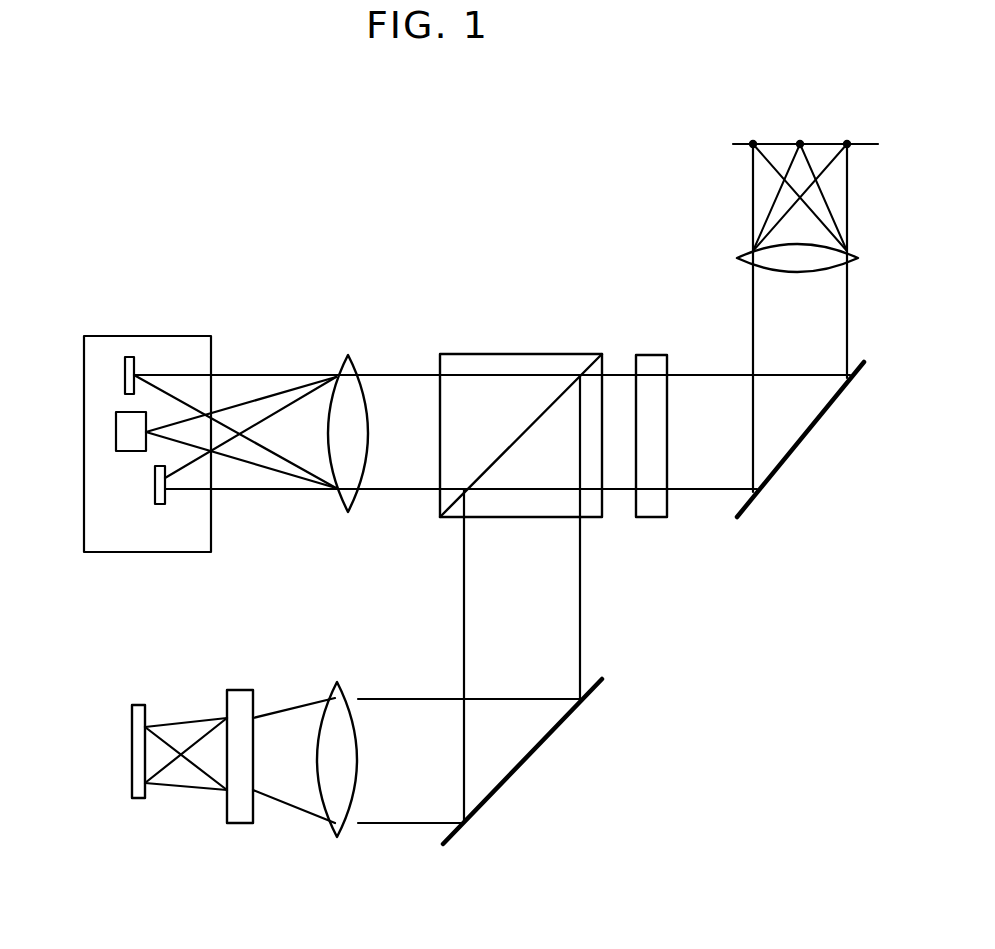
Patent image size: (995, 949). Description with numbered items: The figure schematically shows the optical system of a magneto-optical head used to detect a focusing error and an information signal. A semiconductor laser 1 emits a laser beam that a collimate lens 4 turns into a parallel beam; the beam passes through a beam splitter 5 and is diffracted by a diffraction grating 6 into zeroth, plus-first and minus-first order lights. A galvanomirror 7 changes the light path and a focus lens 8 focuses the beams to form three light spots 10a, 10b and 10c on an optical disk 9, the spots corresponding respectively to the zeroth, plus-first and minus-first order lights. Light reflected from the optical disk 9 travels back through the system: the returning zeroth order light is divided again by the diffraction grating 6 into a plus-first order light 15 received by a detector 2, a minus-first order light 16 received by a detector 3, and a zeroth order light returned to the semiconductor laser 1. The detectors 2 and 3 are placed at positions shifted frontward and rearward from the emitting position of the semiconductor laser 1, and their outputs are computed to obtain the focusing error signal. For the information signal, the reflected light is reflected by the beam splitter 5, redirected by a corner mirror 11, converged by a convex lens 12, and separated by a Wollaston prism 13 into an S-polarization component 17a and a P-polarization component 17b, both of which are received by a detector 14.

The semiconductor laser 1 is at (112, 436).
The detector 2 is at (150, 494).
The detector 3 is at (120, 380).
The collimate lens 4 is at (338, 508).
The beam splitter 5 is at (497, 350).
The diffraction grating 6 is at (651, 520).
The galvanomirror 7 is at (748, 515).
The focus lens 8 is at (735, 258).
The optical disk 9 is at (737, 146).
The light spot 10a is at (800, 138).
The light spot 10b is at (750, 138).
The light spot 10c is at (849, 138).
The corner mirror 11 is at (480, 848).
The convex lens 12 is at (333, 840).
The Wollaston prism 13 is at (238, 826).
The detector 14 is at (128, 796).
The +1-st order light 15 is at (240, 492).
The −1-st order light 16 is at (253, 356).
The S-polarization component 17a is at (178, 733).
The P-polarization component 17b is at (173, 776).